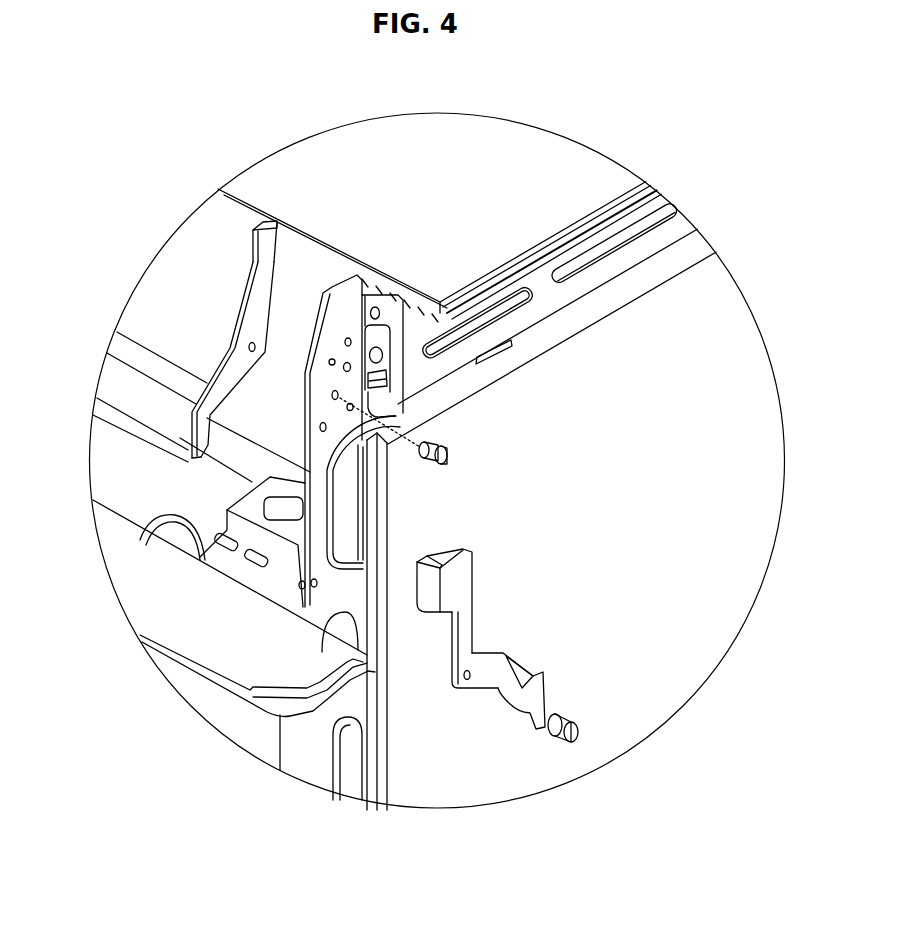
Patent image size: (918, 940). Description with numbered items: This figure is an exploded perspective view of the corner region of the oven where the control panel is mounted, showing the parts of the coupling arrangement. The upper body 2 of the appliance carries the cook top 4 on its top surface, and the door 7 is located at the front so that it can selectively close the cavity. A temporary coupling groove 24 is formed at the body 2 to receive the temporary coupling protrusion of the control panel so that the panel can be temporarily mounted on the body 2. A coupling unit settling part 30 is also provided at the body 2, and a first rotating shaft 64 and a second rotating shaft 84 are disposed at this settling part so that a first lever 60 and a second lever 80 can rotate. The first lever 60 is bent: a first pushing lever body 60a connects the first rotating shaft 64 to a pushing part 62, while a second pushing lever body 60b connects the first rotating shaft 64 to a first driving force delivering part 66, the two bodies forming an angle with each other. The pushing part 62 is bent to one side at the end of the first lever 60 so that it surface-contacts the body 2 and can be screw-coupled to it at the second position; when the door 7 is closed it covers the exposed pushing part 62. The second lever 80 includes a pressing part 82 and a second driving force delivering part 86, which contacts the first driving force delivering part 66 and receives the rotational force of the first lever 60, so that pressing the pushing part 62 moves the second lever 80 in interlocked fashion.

The body 2 is at (400, 343).
The cook top 4 is at (444, 155).
The door 7 is at (158, 607).
The temporary coupling groove 24 is at (358, 276).
The coupling unit settling part 30 is at (313, 460).
The first lever 60 is at (483, 638).
The first pushing lever body 60a is at (488, 672).
The second pushing lever body 60b is at (467, 617).
The pushing part 62 is at (532, 674).
The first rotating shaft 64 is at (566, 713).
The first driving force delivering part 66 is at (426, 583).
The second lever 80 is at (237, 306).
The pressing part 82 is at (254, 247).
The second rotating shaft 84 is at (452, 455).
The second driving force delivering part 86 is at (200, 441).